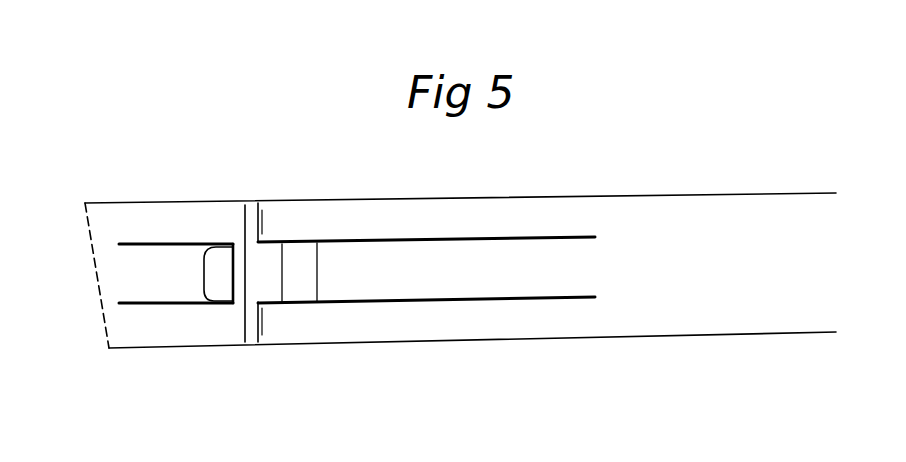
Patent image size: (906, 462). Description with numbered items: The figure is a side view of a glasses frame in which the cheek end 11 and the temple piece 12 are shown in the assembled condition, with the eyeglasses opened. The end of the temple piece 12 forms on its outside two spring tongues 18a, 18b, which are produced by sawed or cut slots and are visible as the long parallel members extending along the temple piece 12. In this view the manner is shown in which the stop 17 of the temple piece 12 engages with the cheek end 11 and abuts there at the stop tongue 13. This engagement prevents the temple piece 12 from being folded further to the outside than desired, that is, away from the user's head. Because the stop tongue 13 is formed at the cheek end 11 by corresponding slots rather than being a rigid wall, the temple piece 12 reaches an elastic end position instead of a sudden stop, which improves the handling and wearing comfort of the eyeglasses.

The cheek end 11 is at (97, 285).
The temple piece 12 is at (692, 252).
The stop tongue 13 is at (158, 278).
The stop 17 is at (218, 279).
The spring tongue 18a is at (408, 215).
The spring tongue 18b is at (406, 317).